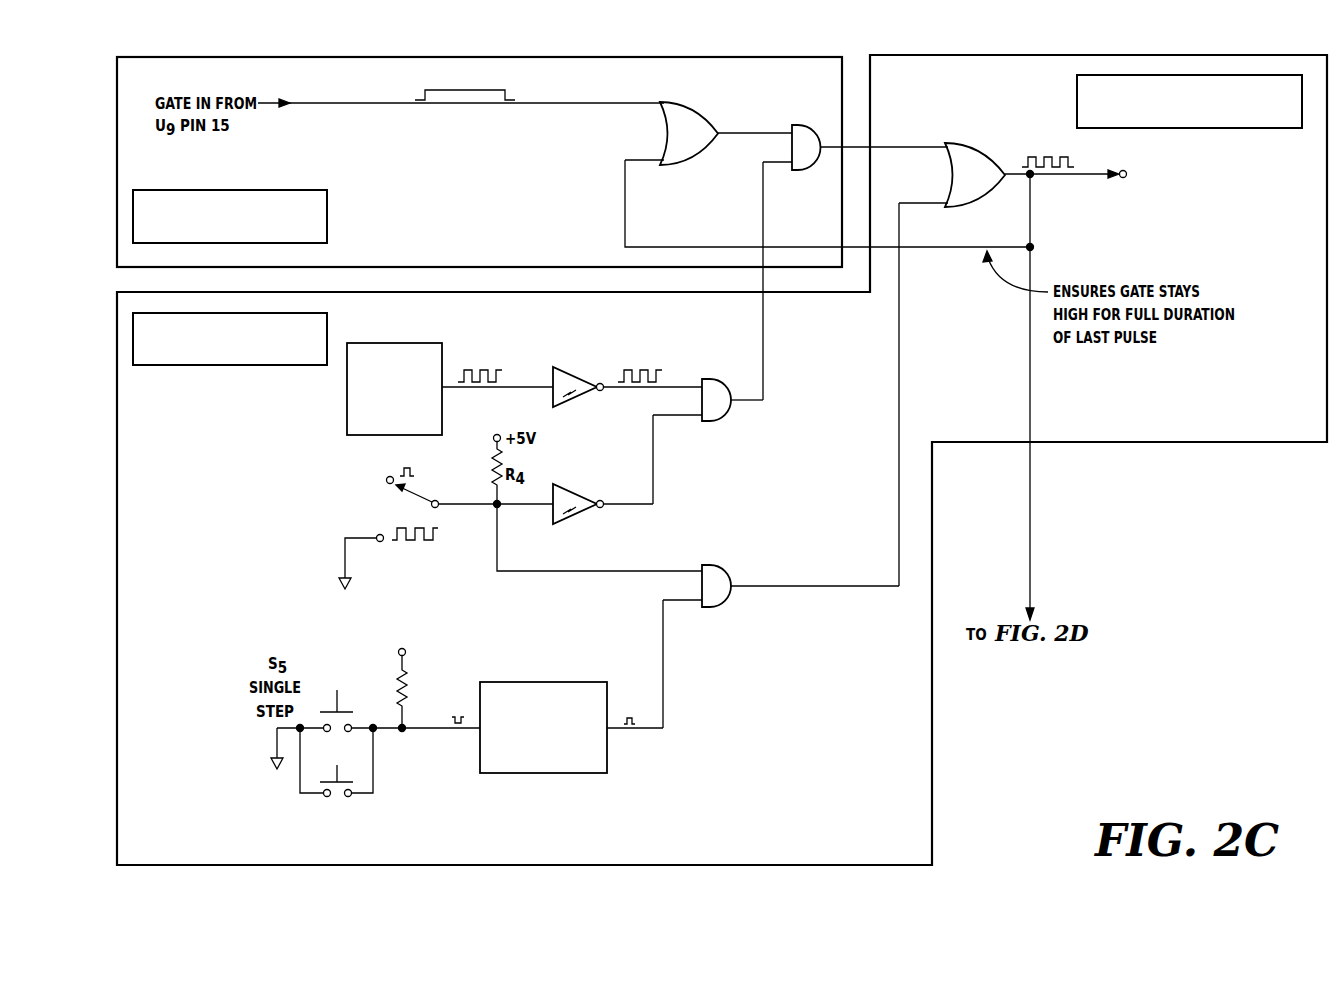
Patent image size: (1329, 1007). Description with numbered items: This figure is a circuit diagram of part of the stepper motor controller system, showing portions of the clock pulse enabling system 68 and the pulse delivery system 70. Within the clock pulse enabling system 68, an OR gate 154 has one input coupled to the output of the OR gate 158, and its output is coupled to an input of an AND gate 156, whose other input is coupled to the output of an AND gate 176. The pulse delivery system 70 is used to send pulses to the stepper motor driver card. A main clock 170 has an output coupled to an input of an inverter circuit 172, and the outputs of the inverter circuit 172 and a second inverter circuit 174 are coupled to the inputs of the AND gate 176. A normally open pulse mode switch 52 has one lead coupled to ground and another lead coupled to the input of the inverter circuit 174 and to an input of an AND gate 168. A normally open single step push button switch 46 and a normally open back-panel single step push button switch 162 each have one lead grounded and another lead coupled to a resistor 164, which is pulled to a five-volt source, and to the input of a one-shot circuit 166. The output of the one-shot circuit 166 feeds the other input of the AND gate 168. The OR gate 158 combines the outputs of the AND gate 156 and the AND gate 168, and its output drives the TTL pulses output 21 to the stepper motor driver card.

The clock pulse enabling system 68 is at (826, 58).
The pulse delivery system 70 is at (917, 58).
The OR gate 158 is at (957, 143).
The OR gate 154 is at (682, 155).
The AND gate 156 is at (800, 163).
The TTL Pulses to Stepper Motor Driver Card output 21 is at (1120, 178).
The main clock 170 is at (350, 422).
The pulse mode switch 52 is at (405, 497).
The inverter circuit 172 is at (581, 393).
The inverter circuit 174 is at (581, 510).
The AND gate 176 is at (712, 423).
The AND gate 168 is at (712, 609).
The single step push button switch 46 is at (337, 700).
The resistor 164 is at (397, 690).
The single step push button switch 162 is at (340, 771).
The one-shot circuit 166 is at (603, 758).